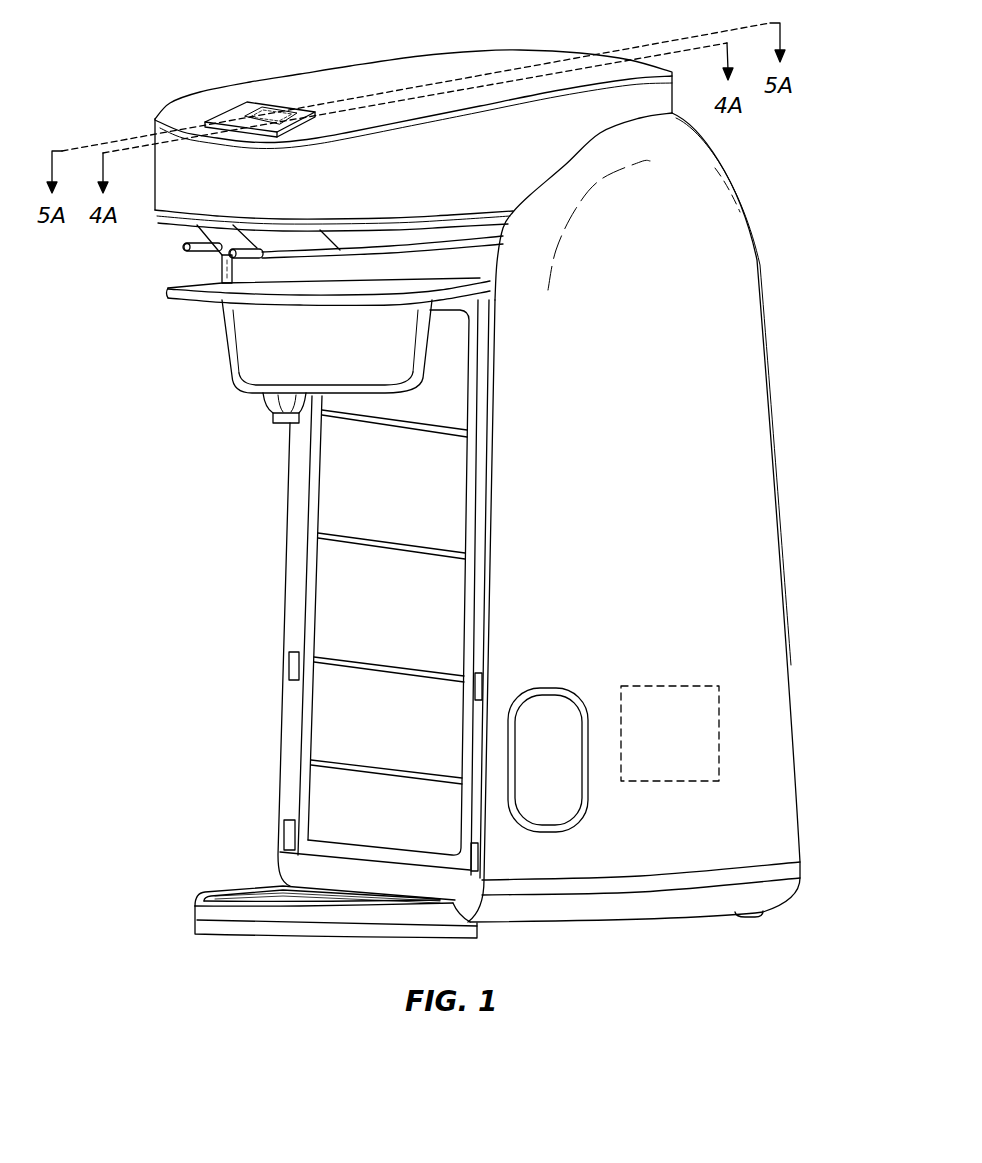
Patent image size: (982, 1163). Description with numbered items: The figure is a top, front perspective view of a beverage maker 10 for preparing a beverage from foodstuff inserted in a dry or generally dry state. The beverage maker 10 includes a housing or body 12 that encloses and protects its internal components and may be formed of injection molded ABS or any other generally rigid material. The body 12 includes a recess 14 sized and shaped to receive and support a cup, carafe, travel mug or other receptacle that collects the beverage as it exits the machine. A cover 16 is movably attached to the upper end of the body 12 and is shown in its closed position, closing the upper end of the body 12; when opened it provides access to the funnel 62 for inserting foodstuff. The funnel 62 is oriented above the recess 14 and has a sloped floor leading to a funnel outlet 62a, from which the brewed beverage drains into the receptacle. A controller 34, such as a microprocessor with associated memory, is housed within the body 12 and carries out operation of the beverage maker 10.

The beverage maker 10 is at (180, 55).
The body 12 is at (777, 438).
The recess 14 is at (250, 468).
The cover 16 is at (322, 87).
The controller 34 is at (719, 702).
The funnel 62 is at (225, 345).
The funnel outlet 62a is at (270, 417).